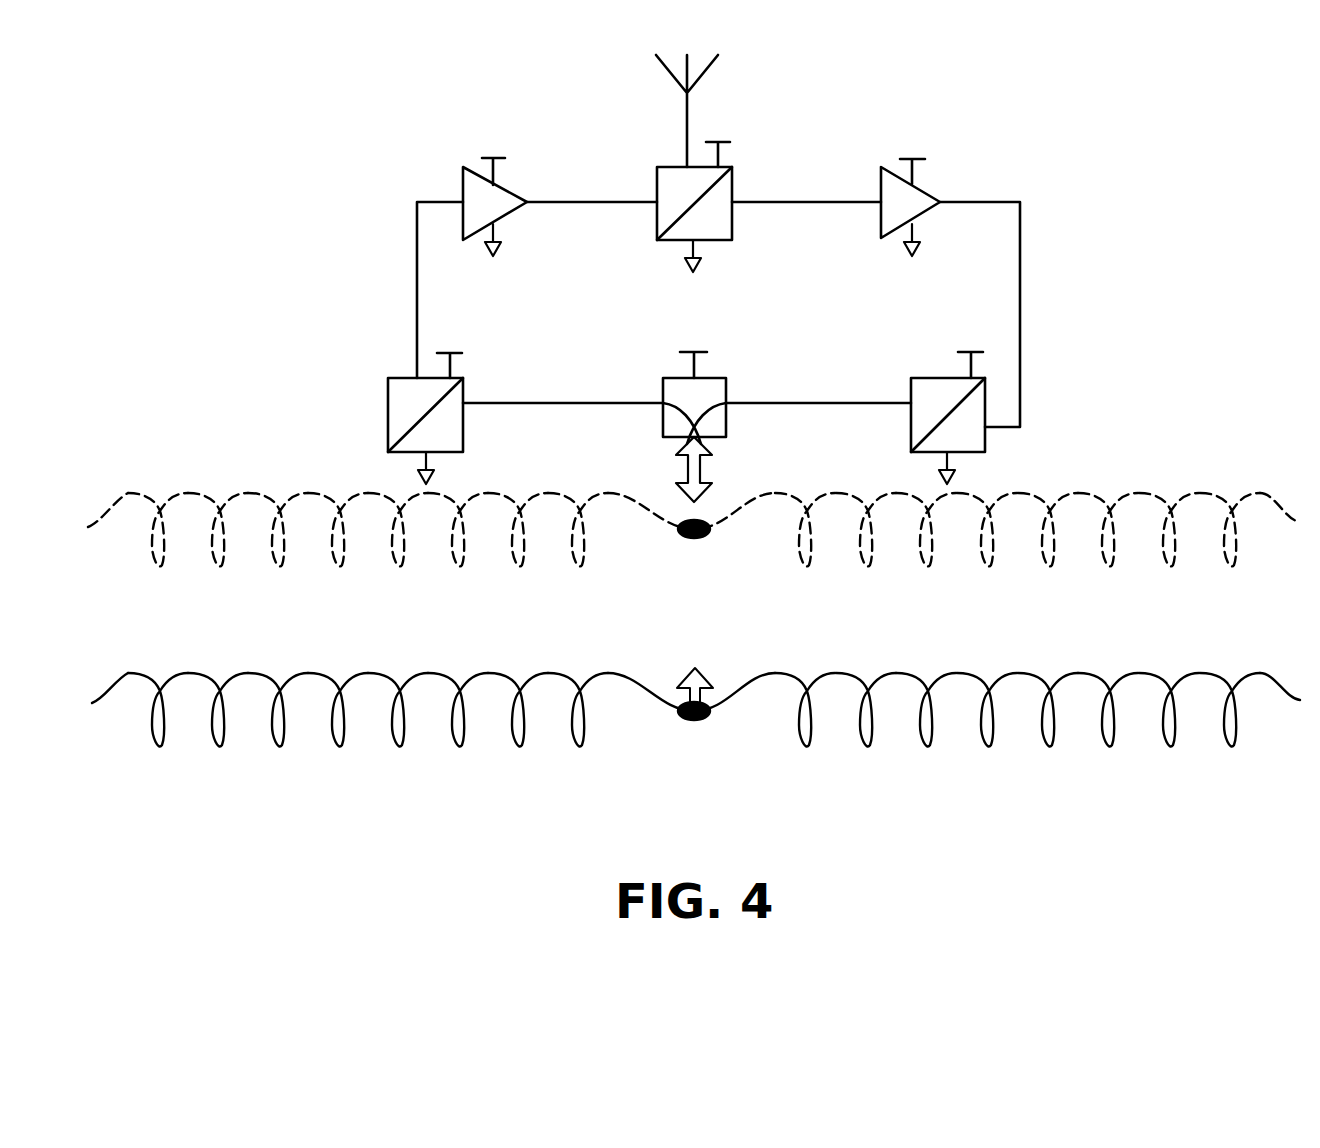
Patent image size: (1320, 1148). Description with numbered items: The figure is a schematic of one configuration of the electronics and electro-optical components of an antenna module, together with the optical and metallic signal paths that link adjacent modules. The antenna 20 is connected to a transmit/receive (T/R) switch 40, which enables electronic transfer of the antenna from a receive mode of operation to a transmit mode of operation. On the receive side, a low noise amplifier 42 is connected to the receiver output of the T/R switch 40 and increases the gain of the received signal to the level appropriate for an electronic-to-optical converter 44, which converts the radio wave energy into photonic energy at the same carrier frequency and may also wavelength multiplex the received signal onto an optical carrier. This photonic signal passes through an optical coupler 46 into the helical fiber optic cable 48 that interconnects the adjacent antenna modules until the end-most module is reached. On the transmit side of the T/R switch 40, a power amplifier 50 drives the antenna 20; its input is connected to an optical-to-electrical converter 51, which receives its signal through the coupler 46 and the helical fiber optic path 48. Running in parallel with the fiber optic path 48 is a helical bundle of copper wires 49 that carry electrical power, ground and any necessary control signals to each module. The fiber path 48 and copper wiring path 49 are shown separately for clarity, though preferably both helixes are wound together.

The antenna 20 is at (703, 77).
The transmit/receive (T/R) switch 40 is at (733, 183).
The low noise amplifier 42 is at (915, 198).
The electronic-to-optical converter 44 is at (985, 390).
The optical coupler 46 is at (726, 388).
The helical fiber optic cable 48 is at (1077, 492).
The helical bundle of copper wires 49 is at (1077, 673).
The power amplifier 50 is at (500, 202).
The optical-to-electrical converter 51 is at (463, 392).